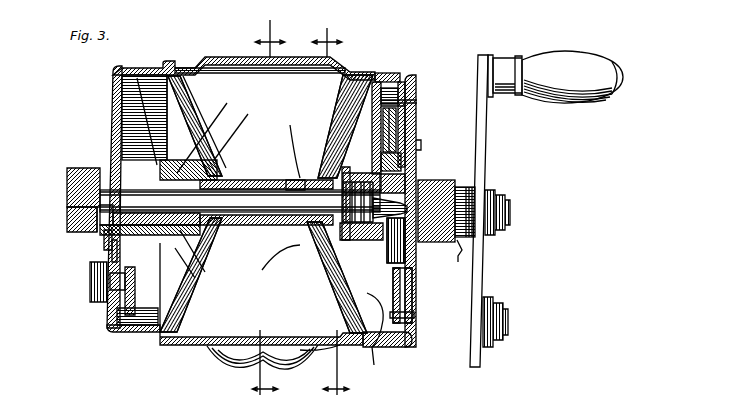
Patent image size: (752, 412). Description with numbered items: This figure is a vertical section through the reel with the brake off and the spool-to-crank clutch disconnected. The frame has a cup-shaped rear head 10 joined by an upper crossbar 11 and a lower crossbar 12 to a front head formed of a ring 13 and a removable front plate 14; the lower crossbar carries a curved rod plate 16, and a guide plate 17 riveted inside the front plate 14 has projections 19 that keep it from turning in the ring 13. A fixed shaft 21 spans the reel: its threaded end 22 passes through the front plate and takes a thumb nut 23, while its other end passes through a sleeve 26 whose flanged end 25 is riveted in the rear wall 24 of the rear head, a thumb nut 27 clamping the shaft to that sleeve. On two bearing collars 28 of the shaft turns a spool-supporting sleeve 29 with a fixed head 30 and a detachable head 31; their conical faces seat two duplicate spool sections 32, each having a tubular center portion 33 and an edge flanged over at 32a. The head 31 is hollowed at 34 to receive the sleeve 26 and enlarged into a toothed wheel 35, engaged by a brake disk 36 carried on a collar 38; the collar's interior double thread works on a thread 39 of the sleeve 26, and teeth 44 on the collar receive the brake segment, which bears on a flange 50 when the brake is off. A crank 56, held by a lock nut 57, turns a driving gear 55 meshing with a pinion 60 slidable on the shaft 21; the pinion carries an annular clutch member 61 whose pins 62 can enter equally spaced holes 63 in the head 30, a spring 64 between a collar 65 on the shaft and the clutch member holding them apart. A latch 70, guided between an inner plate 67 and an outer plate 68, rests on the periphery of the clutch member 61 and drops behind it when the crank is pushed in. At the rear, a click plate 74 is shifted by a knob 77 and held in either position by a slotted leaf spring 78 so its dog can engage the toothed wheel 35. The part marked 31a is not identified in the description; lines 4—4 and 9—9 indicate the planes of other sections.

The rear head 10 is at (222, 197).
The upper crossbar 11 is at (232, 57).
The lower crossbar 12 is at (180, 346).
The ring 13 is at (397, 80).
The front plate 14 is at (418, 122).
The rod plate 16 is at (222, 357).
The guide plate 17 is at (421, 145).
The lugs or projections 19 is at (415, 76).
The shaft 21 is at (177, 230).
The reduced screw-threaded end 22 is at (476, 192).
The thumb nut 23 is at (460, 255).
The rear wall 24 is at (113, 105).
The flanged end 25 is at (78, 178).
The sleeve 26 is at (67, 214).
The thumb nut 27 is at (80, 228).
The bearing collars 28 is at (230, 180).
The spool-supporting sleeve 29 is at (288, 226).
The fixed head 30 is at (125, 72).
The detachable head 31 is at (226, 170).
The spring arm 31a is at (384, 344).
The spool sections 32 is at (350, 120).
The flange 32a is at (158, 70).
The tubular center portion 33 is at (240, 188).
The hollow 34 is at (238, 129).
The toothed wheel 35 is at (212, 188).
The brake disk 36 is at (185, 262).
The collar 38 is at (104, 245).
The thread 39 is at (104, 225).
The teeth 44 is at (112, 252).
The flange 50 is at (150, 68).
The driving gear 55 is at (413, 280).
The crank 56 is at (487, 116).
The lock nut 57 is at (511, 206).
The pinion 60 is at (406, 243).
The clutch member 61 is at (345, 252).
The pins 62 is at (335, 245).
The holes 63 is at (318, 196).
The spring 64 is at (436, 185).
The collar 65 is at (340, 236).
The inner plate 67 is at (418, 106).
The outer plate 68 is at (384, 72).
The latch 70 is at (403, 163).
The click plate 74 is at (135, 332).
The knob 77 is at (90, 284).
The leaf spring 78 is at (134, 270).
The section line 4 is at (268, 207).
The section line 9 is at (330, 211).